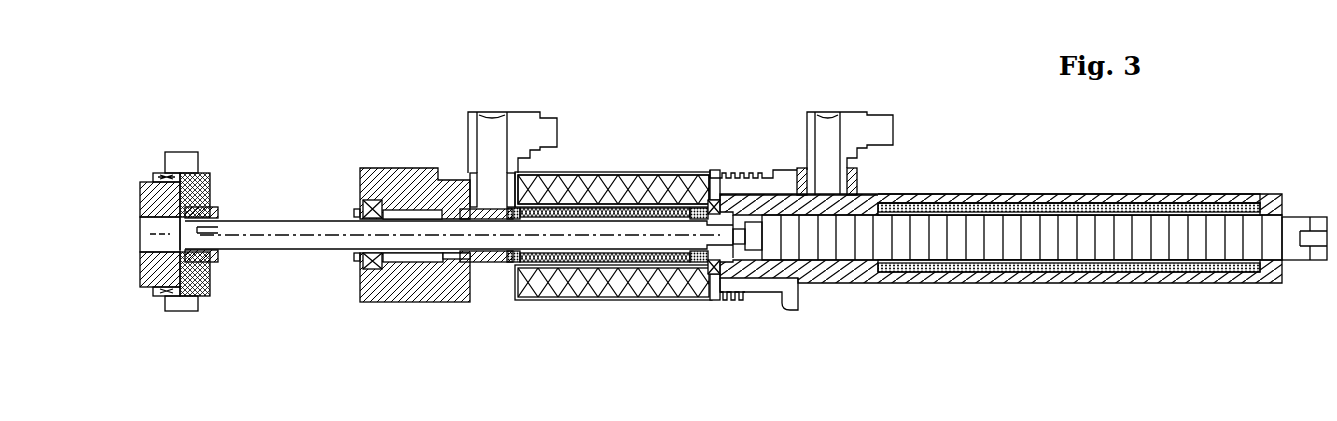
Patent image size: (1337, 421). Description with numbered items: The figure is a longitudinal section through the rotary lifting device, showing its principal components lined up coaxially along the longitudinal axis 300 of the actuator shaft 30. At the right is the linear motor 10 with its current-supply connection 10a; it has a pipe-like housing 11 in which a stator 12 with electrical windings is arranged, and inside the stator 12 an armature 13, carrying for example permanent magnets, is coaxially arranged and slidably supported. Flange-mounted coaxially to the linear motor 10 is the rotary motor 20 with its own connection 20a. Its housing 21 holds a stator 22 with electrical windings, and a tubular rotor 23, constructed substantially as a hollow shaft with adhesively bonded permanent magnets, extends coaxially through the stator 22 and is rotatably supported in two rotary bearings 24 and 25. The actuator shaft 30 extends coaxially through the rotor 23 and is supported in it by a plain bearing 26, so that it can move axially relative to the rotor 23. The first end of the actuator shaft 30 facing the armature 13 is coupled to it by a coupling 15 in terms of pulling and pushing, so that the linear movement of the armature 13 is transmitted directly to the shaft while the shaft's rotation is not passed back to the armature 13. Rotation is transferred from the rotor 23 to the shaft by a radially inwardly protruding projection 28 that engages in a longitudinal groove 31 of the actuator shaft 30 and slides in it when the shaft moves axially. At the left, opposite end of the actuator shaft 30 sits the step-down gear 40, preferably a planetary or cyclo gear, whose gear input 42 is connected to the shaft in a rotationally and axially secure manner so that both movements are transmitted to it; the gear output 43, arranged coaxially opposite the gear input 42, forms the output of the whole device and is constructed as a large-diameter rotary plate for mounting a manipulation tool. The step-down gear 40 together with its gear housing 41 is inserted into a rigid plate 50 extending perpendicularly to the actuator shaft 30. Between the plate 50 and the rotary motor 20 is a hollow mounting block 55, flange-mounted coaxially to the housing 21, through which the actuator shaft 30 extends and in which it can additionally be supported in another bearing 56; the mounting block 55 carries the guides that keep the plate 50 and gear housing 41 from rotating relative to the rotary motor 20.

The linear motor 10 is at (942, 292).
The connection 10a is at (857, 120).
The housing 11 is at (1012, 193).
The stator 12 is at (1073, 207).
The armature 13 is at (1152, 230).
The coupling 15 is at (750, 287).
The rotary motor 20 is at (577, 312).
The connection 20a is at (520, 122).
The housing 21 is at (605, 170).
The stator 22 is at (663, 183).
The rotor 23 is at (610, 288).
The rotary bearing 24 is at (722, 188).
The rotary bearing 25 is at (458, 262).
The plain bearing 26 is at (484, 262).
The projection 28 is at (722, 300).
The actuator shaft 30 is at (296, 256).
The longitudinal axis 300 is at (336, 240).
The longitudinal groove 31 is at (527, 262).
The step-down gear 40 is at (218, 178).
The gear housing 41 is at (212, 273).
The gear input 42 is at (208, 207).
The gear output 43 is at (145, 287).
The plate 50 is at (187, 150).
The mounting block 55 is at (388, 168).
The bearing 56 is at (359, 186).